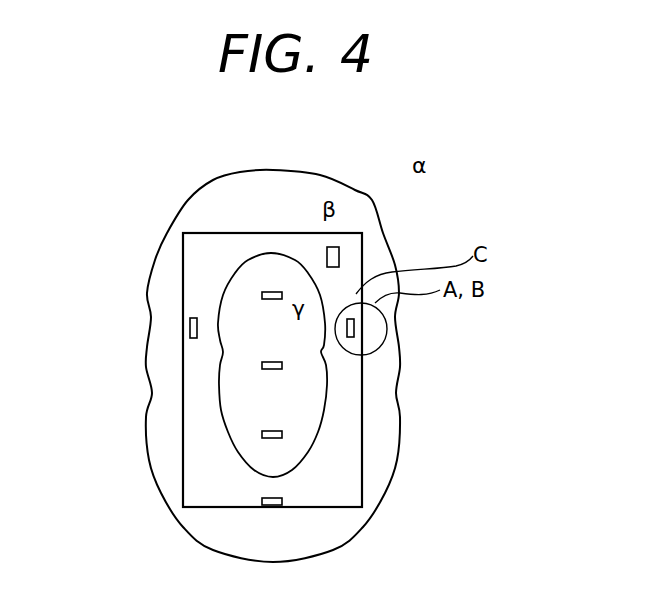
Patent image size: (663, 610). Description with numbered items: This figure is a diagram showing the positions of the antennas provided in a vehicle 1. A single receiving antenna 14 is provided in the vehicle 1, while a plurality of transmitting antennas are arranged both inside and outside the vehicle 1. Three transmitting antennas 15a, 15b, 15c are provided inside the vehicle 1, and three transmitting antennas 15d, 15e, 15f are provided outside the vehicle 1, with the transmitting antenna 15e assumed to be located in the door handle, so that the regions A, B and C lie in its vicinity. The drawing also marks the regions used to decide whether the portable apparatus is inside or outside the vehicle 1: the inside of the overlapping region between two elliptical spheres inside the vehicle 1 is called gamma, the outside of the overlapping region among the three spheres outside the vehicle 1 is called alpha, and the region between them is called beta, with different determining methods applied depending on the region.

The vehicle 1 is at (362, 463).
The receiving antenna 14 is at (339, 251).
The transmitting antenna 15a is at (272, 292).
The transmitting antenna 15b is at (282, 362).
The transmitting antenna 15c is at (262, 432).
The transmitting antenna 15d is at (193, 318).
The transmitting antenna 15e is at (354, 323).
The transmitting antenna 15f is at (282, 499).